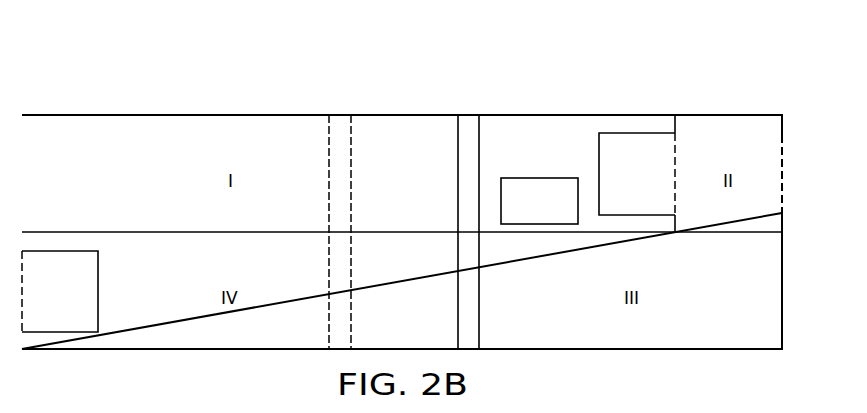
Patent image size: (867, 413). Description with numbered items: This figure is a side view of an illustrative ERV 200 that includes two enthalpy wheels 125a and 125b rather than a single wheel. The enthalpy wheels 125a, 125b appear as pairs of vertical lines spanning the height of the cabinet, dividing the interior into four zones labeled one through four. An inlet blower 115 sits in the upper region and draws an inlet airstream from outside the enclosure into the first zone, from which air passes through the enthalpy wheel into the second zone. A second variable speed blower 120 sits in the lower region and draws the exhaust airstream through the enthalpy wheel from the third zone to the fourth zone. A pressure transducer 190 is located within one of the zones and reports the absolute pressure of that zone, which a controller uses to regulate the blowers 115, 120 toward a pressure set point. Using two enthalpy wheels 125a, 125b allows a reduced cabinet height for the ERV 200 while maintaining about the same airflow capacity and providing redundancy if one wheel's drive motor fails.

The ERV 200 is at (208, 78).
The enthalpy wheel 125a is at (329, 152).
The enthalpy wheel 125b is at (480, 283).
The variable speed blower 115 is at (599, 169).
The pressure transducer 190 is at (560, 212).
The variable speed blower 120 is at (99, 287).